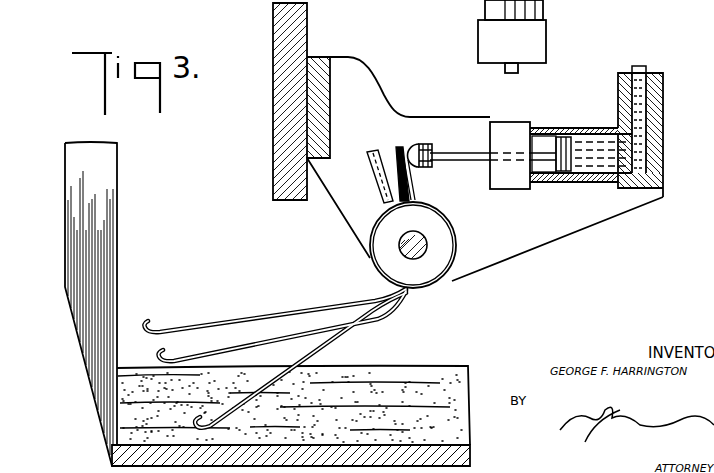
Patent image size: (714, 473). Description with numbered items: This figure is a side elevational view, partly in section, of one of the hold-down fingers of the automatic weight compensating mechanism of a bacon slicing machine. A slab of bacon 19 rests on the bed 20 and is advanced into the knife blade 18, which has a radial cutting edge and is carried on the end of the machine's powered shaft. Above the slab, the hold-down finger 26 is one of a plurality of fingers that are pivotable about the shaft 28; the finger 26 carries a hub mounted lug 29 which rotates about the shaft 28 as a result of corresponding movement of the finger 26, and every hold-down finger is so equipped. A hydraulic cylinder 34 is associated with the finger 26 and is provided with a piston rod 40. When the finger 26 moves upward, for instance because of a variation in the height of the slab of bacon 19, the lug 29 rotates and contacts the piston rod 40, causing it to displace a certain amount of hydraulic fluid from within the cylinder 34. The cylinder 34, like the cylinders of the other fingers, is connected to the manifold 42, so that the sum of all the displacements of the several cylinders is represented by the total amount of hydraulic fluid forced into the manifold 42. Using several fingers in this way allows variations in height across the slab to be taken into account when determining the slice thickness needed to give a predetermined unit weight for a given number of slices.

The knife blade 18 is at (72, 238).
The slab of bacon 19 is at (390, 378).
The bed 20 is at (470, 455).
The hold-down finger 26 is at (249, 354).
The shaft 28 is at (430, 248).
The hub mounted lug 29 is at (400, 147).
The hydraulic cylinder 34 is at (588, 174).
The piston rod 40 is at (451, 150).
The manifold 42 is at (663, 128).